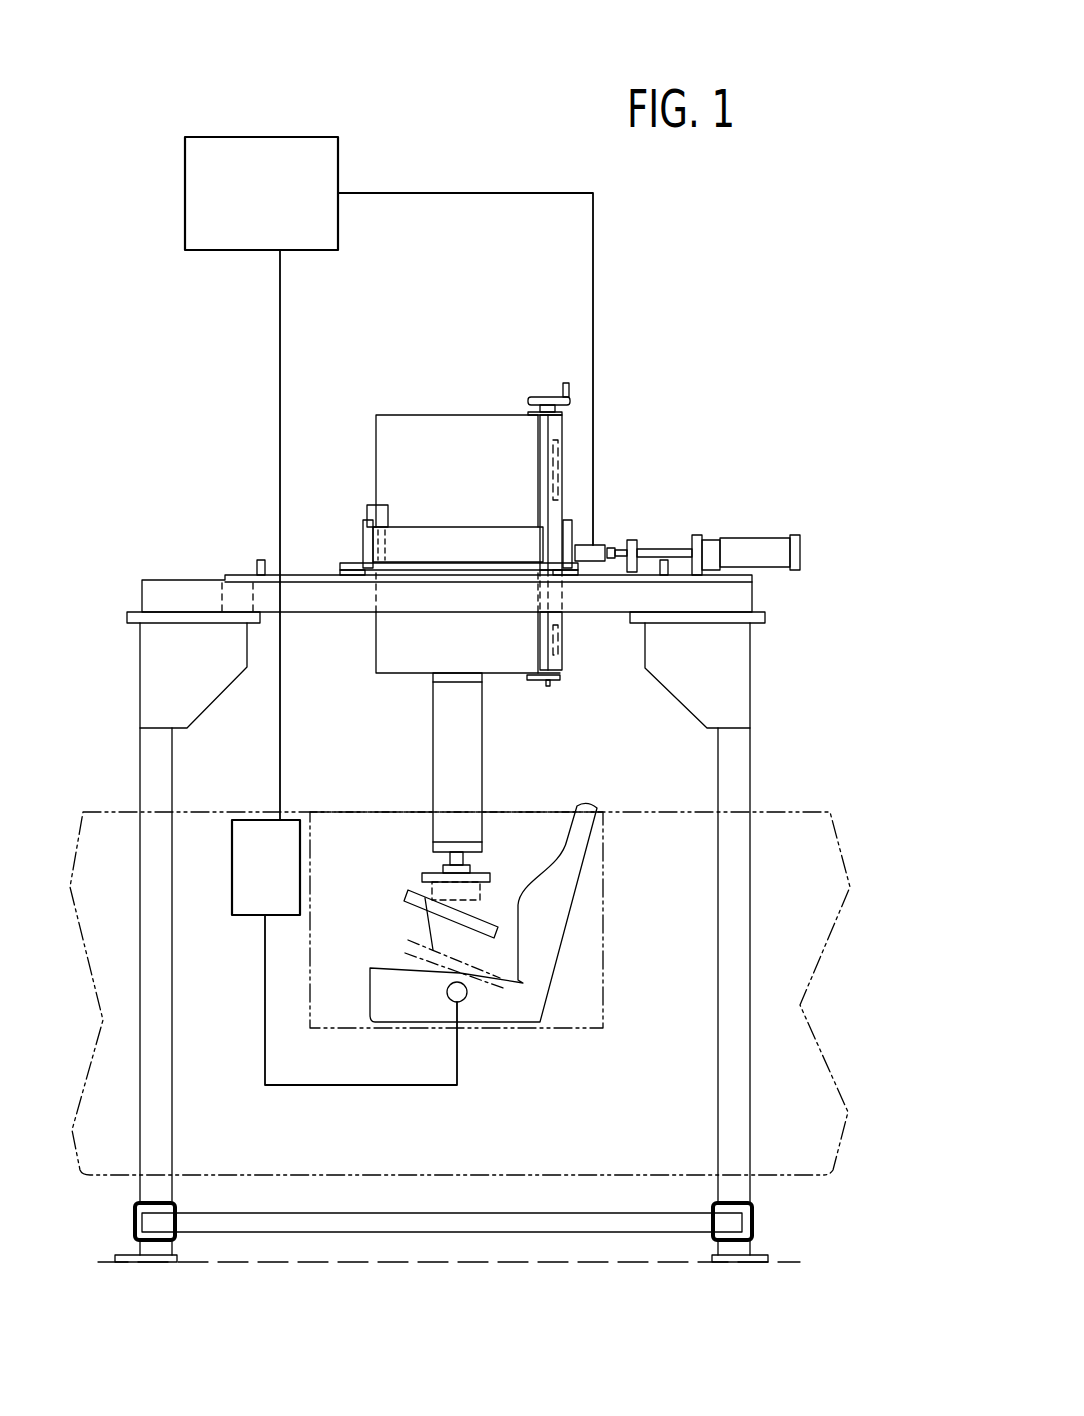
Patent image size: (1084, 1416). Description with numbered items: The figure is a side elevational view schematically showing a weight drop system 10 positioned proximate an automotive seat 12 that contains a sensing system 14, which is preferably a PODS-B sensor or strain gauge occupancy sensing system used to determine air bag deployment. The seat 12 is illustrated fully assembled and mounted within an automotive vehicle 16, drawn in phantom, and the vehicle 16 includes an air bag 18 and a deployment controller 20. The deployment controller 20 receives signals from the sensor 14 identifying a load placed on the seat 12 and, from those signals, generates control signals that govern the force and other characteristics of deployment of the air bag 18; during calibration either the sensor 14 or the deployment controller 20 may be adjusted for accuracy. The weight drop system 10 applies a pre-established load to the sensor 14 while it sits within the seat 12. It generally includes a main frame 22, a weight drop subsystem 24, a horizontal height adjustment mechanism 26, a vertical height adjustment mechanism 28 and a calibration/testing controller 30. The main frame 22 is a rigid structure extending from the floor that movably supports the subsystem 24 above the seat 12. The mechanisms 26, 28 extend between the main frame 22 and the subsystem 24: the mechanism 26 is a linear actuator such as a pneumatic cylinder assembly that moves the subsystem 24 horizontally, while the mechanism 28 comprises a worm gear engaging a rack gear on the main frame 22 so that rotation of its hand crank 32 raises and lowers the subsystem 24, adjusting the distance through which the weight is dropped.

The weight drop system 10 is at (190, 70).
The automotive seat 12 is at (583, 797).
The sensing system 14 is at (462, 1002).
The automotive vehicle 16 is at (783, 806).
The air bag 18 is at (232, 866).
The deployment controller 20 is at (188, 988).
The main frame 22 is at (752, 732).
The weight drop subsystem 24 is at (375, 462).
The horizontal height adjustment mechanism 26 is at (697, 543).
The vertical height adjustment mechanism 28 is at (552, 394).
The calibration/testing controller 30 is at (262, 137).
The hand crank 32 is at (569, 390).